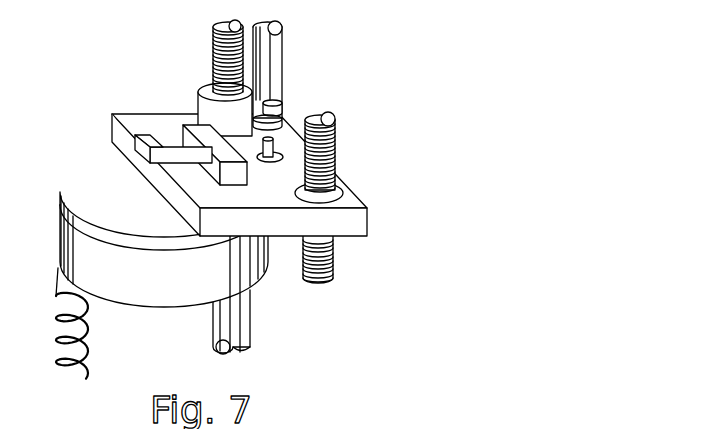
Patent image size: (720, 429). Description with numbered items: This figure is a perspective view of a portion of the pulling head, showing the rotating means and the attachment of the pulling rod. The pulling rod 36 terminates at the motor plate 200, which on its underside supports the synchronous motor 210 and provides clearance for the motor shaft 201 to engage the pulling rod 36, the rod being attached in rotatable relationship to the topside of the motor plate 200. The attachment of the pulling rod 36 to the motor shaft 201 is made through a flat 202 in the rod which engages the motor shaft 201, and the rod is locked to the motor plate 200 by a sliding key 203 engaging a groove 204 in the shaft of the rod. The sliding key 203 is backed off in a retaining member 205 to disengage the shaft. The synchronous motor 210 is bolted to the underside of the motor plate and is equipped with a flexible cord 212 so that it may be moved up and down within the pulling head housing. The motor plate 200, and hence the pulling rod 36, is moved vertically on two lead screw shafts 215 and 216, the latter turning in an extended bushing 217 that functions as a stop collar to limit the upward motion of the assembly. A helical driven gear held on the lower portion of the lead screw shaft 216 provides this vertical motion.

The pulling rod 36 is at (281, 36).
The motor plate 200 is at (358, 225).
The motor shaft 201 is at (271, 140).
The flat 202 is at (277, 98).
The sliding key 203 is at (335, 168).
The groove 204 is at (272, 112).
The retaining member 205 is at (198, 128).
The synchronous motor 210 is at (174, 289).
The flexible cord 212 is at (55, 358).
The lead screw shaft 215 is at (336, 140).
The lead screw shaft 216 is at (214, 38).
The extended bushing 217 is at (205, 90).